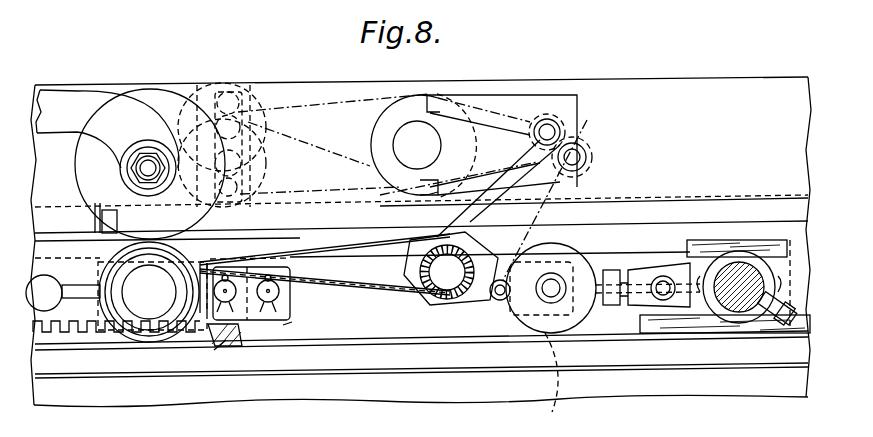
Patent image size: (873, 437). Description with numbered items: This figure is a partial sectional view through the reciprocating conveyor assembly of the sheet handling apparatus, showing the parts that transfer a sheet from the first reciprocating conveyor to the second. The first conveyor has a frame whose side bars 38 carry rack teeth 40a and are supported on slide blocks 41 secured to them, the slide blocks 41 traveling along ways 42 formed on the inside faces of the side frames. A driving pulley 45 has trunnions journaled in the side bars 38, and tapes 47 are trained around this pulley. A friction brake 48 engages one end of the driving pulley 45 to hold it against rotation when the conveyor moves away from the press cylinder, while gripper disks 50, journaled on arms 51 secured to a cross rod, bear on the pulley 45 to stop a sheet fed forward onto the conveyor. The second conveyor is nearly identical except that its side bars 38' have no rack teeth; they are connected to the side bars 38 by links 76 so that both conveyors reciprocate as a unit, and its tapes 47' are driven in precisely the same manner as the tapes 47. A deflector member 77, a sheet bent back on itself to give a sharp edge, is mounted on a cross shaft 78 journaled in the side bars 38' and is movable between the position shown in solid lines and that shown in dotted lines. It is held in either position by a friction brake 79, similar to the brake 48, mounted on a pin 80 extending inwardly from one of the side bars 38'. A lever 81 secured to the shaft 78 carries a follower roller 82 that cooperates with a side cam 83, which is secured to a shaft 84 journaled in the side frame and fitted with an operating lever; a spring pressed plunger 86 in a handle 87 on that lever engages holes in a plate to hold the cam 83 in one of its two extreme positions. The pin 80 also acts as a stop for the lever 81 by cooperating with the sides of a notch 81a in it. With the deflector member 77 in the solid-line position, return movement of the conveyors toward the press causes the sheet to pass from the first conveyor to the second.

The side bars 38 is at (209, 369).
The side bars 38' is at (293, 360).
The rack teeth 40a is at (208, 342).
The slide blocks 41 is at (198, 242).
The ways 42 is at (613, 340).
The driving pulley 45 is at (133, 335).
The tapes 47 is at (78, 208).
The tapes 47' is at (737, 213).
The friction brake 48 is at (75, 315).
The gripper disks 50 is at (150, 103).
The arms 51 is at (62, 100).
The links 76 is at (257, 322).
The deflector member 77 is at (384, 268).
The cross shaft 78 is at (437, 298).
The friction brake 79 is at (500, 312).
The pin 80 is at (493, 296).
The lever 81 is at (530, 214).
The notch 81a is at (547, 382).
The follower roller 82 is at (578, 147).
The side cam 83 is at (505, 97).
The shaft 84 is at (408, 141).
The spring pressed plunger 86 is at (268, 147).
The handle 87 is at (274, 82).